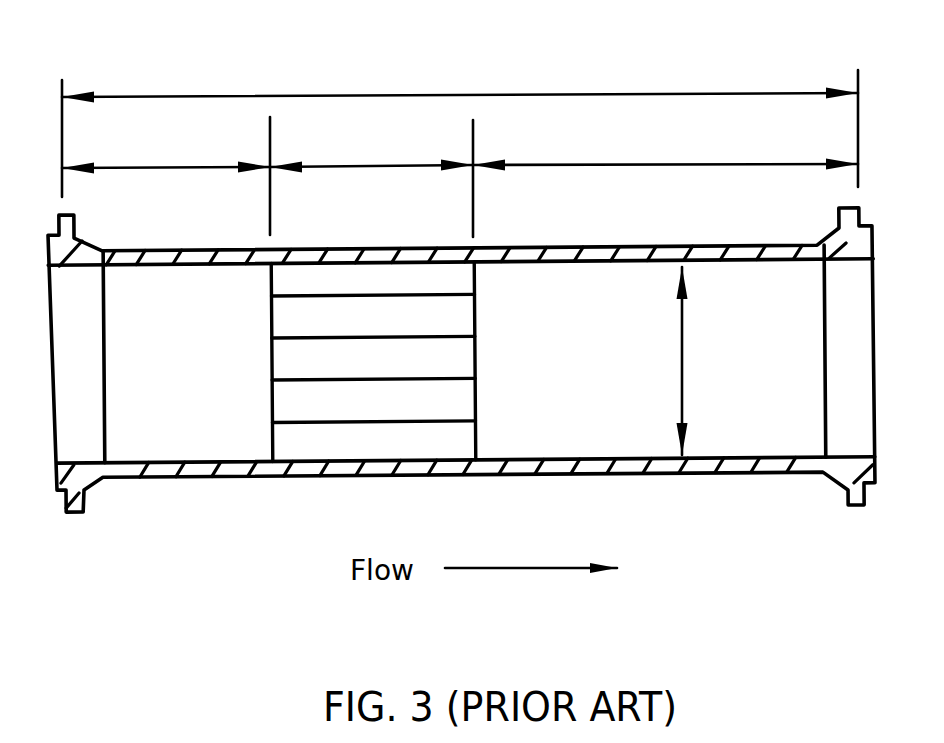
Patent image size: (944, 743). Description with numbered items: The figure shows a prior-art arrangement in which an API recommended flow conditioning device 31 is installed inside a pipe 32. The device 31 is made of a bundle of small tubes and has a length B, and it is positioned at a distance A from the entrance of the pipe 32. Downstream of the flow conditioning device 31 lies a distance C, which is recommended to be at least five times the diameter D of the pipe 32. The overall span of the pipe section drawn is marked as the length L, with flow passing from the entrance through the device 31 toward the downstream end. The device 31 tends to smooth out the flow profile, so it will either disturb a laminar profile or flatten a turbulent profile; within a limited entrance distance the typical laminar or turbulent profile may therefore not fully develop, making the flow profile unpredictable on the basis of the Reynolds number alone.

The flow conditioning device 31 is at (272, 375).
The pipe 32 is at (587, 477).
The overall length of conduit L is at (460, 126).
The distance from pipe entrance A is at (166, 176).
The length of flow conditioning device B is at (371, 178).
The downstream distance C is at (665, 150).
The diameter of pipe D is at (704, 361).